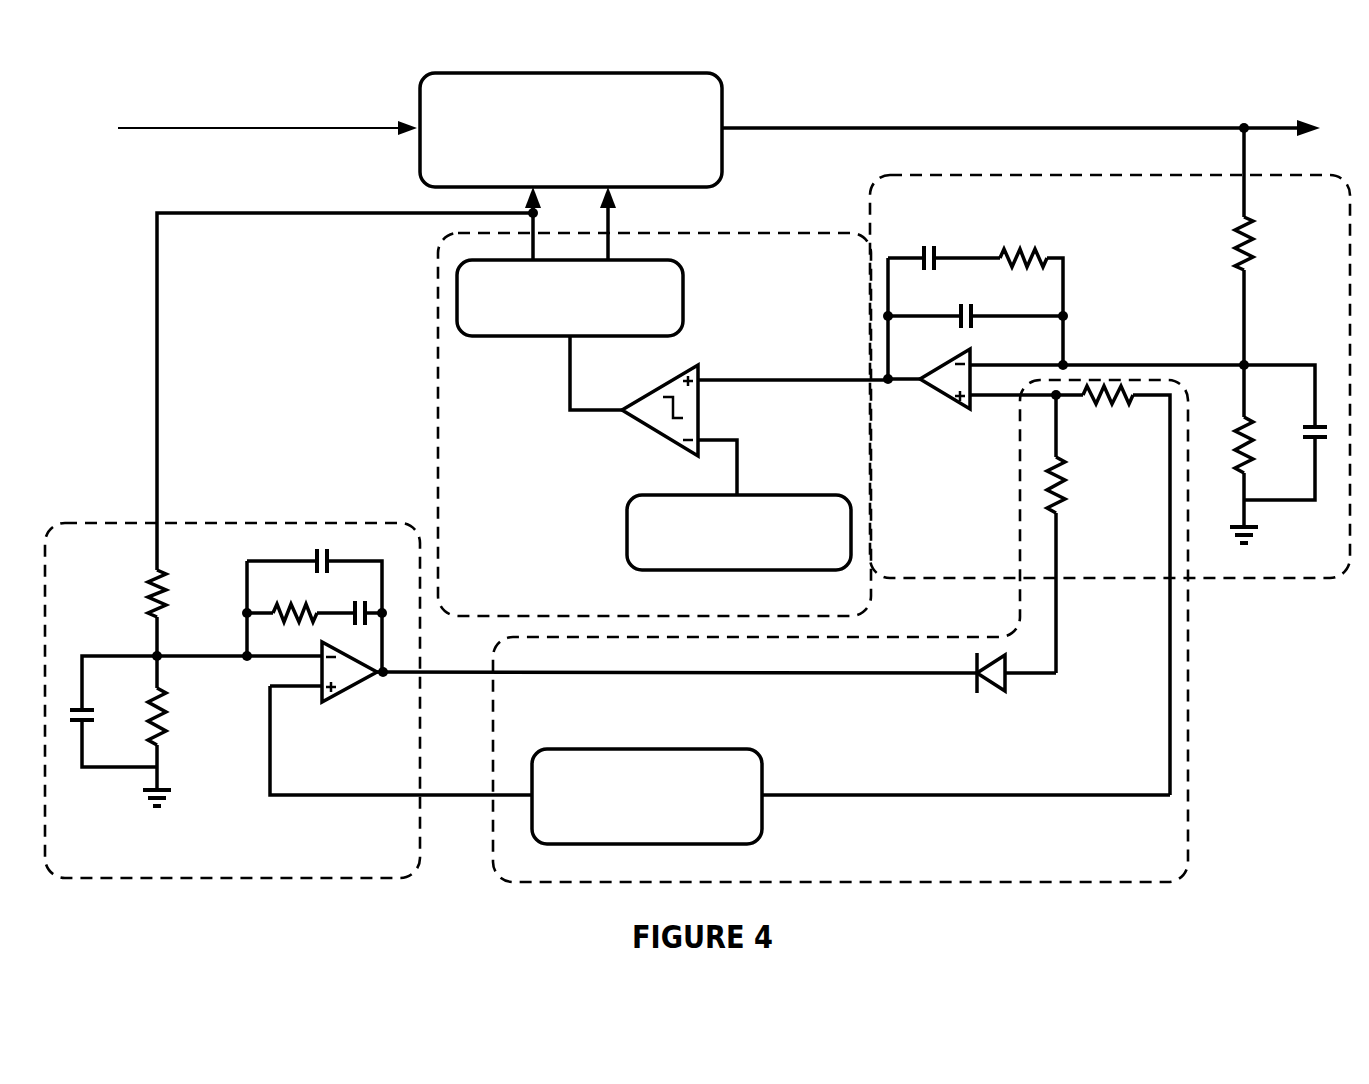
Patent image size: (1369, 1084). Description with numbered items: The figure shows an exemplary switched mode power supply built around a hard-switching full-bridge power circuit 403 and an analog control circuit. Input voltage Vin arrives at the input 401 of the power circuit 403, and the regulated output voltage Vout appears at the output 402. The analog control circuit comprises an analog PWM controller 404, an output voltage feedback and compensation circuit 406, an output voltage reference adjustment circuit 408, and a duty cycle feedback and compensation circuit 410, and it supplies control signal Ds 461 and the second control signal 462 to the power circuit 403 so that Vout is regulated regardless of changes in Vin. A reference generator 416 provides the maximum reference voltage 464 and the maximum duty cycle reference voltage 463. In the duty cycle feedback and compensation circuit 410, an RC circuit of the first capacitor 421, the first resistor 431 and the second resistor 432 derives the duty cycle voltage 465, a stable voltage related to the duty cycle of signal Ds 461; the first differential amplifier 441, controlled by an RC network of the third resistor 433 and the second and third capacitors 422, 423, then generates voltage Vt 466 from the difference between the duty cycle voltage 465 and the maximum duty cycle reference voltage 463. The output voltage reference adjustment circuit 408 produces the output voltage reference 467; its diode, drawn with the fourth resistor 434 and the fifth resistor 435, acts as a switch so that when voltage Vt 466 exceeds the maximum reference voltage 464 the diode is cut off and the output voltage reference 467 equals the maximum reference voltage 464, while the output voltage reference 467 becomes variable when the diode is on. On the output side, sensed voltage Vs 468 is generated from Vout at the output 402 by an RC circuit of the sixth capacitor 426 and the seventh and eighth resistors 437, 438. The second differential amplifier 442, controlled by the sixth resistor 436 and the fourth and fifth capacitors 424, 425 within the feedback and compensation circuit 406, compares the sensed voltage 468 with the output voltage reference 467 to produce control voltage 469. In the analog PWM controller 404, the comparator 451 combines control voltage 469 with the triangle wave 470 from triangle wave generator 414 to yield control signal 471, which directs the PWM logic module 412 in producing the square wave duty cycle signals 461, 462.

The input 401 is at (190, 100).
The output 402 is at (1204, 100).
The hard-switching full-bridge power circuit 403 is at (591, 171).
The analog pulse-width-modulation (PWM) controller 404 is at (812, 614).
The output voltage feedback and compensation circuit 406 is at (1182, 231).
The output voltage reference adjustment circuit 408 is at (1092, 881).
The duty cycle feedback and compensation circuit 410 is at (367, 879).
The PWM logic module 412 is at (590, 323).
The triangle wave generator 414 is at (817, 561).
The reference generator 416 is at (667, 843).
The capacitor C1 421 is at (113, 711).
The capacitor C2 422 is at (314, 578).
The capacitor C3 423 is at (358, 631).
The capacitor C4 424 is at (973, 312).
The capacitor C5 425 is at (944, 310).
The capacitor C6 426 is at (1298, 432).
The resistor R1 431 is at (144, 604).
The resistor R2 432 is at (146, 731).
The resistor R3 433 is at (298, 608).
The resistor R4 434 is at (1072, 534).
The resistor R5 435 is at (1113, 590).
The resistor R6 436 is at (1024, 305).
The resistor R7 437 is at (1239, 454).
The resistor R8 438 is at (1258, 286).
The differential amplifier U1 441 is at (329, 677).
The differential amplifier U2 442 is at (926, 384).
The comparator CO1 451 is at (660, 410).
The control signal Ds 461 is at (606, 449).
The control signal Dsr 462 is at (625, 223).
The maximum duty cycle reference voltage VDref 463 is at (401, 740).
The maximum reference voltage Vref0 464 is at (966, 784).
The voltage VDt 465 is at (237, 656).
The voltage Vt 466 is at (680, 669).
The output voltage reference Vref 467 is at (1015, 396).
The voltage Vs 468 is at (1109, 355).
The control voltage 469 is at (793, 369).
The triangle wave 470 is at (721, 457).
The control signal 471 is at (596, 373).